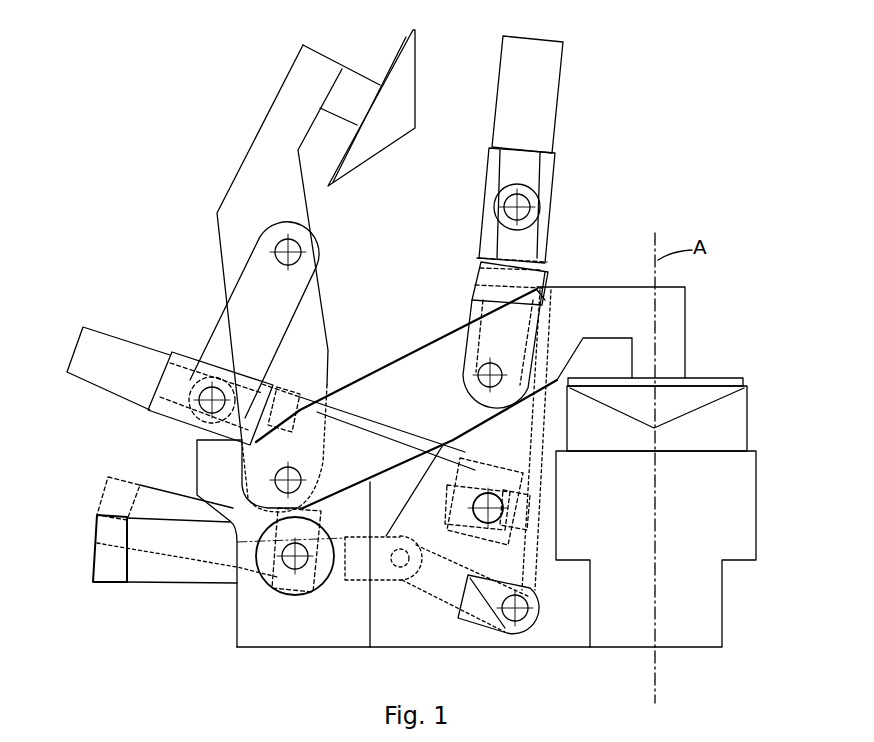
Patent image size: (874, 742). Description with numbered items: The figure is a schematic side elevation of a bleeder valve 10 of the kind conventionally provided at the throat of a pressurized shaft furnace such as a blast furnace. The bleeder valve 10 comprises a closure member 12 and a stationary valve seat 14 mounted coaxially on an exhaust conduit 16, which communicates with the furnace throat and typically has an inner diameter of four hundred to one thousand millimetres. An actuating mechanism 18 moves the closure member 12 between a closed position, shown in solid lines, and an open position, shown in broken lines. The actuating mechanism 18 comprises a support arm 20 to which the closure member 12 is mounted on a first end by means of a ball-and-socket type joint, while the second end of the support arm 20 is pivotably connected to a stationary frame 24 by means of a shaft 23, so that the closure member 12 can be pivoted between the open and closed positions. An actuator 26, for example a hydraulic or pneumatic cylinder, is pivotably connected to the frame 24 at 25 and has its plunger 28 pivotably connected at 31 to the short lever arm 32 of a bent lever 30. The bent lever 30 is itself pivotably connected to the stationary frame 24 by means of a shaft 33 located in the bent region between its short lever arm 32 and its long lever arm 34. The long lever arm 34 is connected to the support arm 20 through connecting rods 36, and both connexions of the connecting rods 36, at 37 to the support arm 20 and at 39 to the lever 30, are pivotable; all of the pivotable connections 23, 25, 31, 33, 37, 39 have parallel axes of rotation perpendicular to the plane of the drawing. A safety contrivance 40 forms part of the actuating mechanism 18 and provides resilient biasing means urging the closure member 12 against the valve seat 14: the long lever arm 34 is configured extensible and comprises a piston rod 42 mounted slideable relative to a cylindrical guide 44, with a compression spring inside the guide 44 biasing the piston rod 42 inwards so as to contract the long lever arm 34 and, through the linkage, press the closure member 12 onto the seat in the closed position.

The bleeder valve 10 is at (702, 86).
The closure member 12 is at (407, 85).
The stationary valve seat 14 is at (742, 410).
The exhaust conduit 16 is at (703, 533).
The actuating mechanism 18 is at (197, 181).
The support arm 20 is at (395, 373).
The shaft 23 is at (305, 472).
The stationary frame 24 is at (358, 526).
The pivotable connection of actuator to frame 25 is at (283, 583).
The actuator 26 is at (198, 551).
The plunger 28 is at (373, 582).
The bent lever 30 is at (558, 124).
The pivotable connection of plunger to short lever arm 31 is at (530, 600).
The short lever arm 32 is at (393, 518).
The shaft 33 is at (507, 515).
The long lever arm 34 is at (528, 418).
The connecting rods 36 is at (468, 318).
The pivotable connection of connecting rods to support arm 37 is at (496, 367).
The pivotable connection of connecting rods to lever 39 is at (523, 200).
The safety contrivance 40 is at (470, 293).
The piston rod 42 is at (547, 258).
The cylindrical guide 44 is at (535, 305).